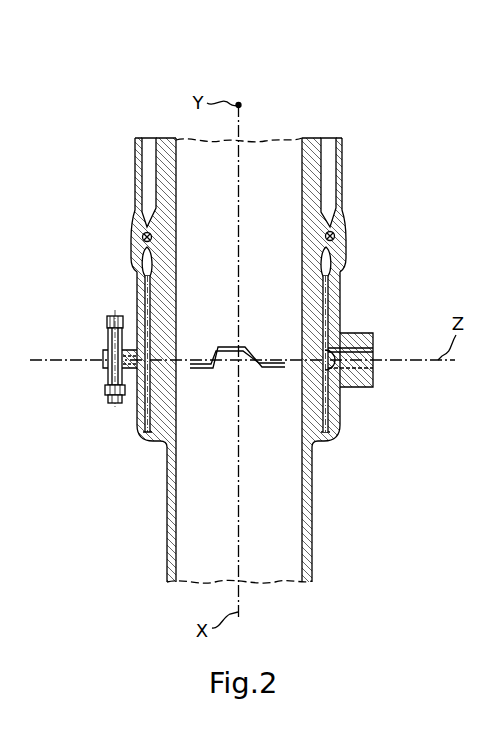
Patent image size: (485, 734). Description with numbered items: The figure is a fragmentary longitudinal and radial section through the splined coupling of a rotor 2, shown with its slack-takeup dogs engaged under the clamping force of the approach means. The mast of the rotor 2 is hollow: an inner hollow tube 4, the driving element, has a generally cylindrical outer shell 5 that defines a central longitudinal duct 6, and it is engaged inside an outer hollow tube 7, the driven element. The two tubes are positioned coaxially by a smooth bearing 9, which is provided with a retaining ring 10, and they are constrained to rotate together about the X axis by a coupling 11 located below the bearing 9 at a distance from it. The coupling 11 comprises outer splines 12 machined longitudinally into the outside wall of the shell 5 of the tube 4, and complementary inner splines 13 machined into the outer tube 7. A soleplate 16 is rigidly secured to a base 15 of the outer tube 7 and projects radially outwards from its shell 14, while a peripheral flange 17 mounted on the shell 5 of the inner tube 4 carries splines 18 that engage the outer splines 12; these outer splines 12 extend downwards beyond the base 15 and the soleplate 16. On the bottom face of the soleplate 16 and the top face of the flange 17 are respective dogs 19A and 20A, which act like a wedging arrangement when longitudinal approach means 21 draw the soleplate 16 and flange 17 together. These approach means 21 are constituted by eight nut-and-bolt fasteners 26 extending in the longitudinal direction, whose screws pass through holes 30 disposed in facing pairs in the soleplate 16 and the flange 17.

The rotor 2 is at (103, 99).
The hollow tube 4 is at (330, 516).
The outer shell 5 is at (312, 555).
The longitudinal duct 6 is at (266, 566).
The hollow tube 7 is at (343, 175).
The smooth bearing 9 is at (325, 230).
The retaining ring 10 is at (336, 237).
The coupling 11 is at (396, 302).
The outer splines 12 is at (136, 318).
The inner splines 13 is at (152, 300).
The shell 14 is at (137, 172).
The base 15 is at (350, 324).
The soleplate 16 is at (370, 343).
The peripheral flange 17 is at (341, 415).
The splines 18 is at (150, 435).
The dogs 19A is at (105, 340).
The dogs 20A is at (225, 370).
The longitudinal approach means 21 is at (98, 407).
The nut-and-bolt fasteners 26 is at (117, 410).
The holes 30 is at (105, 375).